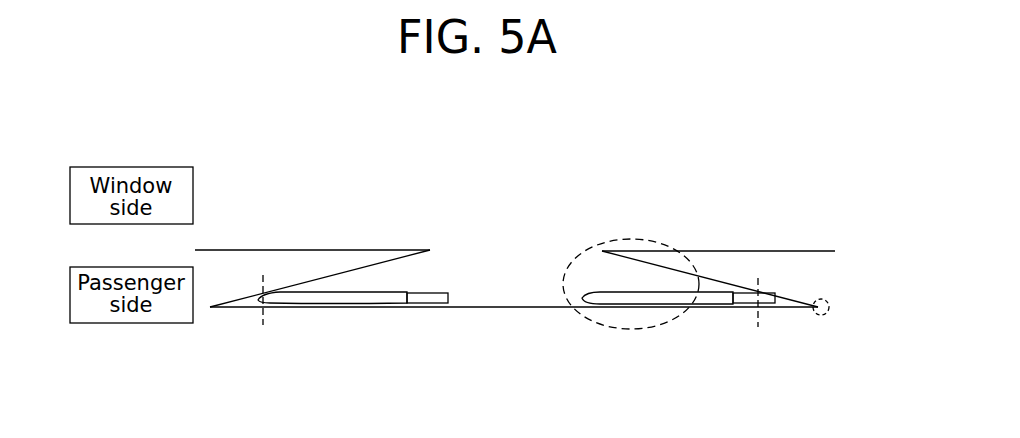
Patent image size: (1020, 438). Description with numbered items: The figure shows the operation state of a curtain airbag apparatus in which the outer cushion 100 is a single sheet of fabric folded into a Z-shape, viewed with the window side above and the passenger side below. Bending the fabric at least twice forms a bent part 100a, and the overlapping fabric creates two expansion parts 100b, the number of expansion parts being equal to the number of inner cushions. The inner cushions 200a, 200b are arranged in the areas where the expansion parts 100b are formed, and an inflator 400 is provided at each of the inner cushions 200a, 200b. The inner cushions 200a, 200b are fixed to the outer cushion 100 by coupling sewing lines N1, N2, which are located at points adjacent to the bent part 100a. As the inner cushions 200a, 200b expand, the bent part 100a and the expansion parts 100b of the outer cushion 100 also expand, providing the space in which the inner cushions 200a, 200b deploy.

The outer cushion 100 is at (510, 306).
The bent part 100a is at (822, 299).
The expansion part 100b is at (631, 238).
The inner cushion 200a is at (342, 305).
The inner cushion 200b is at (635, 305).
The inflator 400 is at (428, 305).
The coupling sewing line N1 is at (262, 326).
The coupling sewing line N2 is at (758, 320).